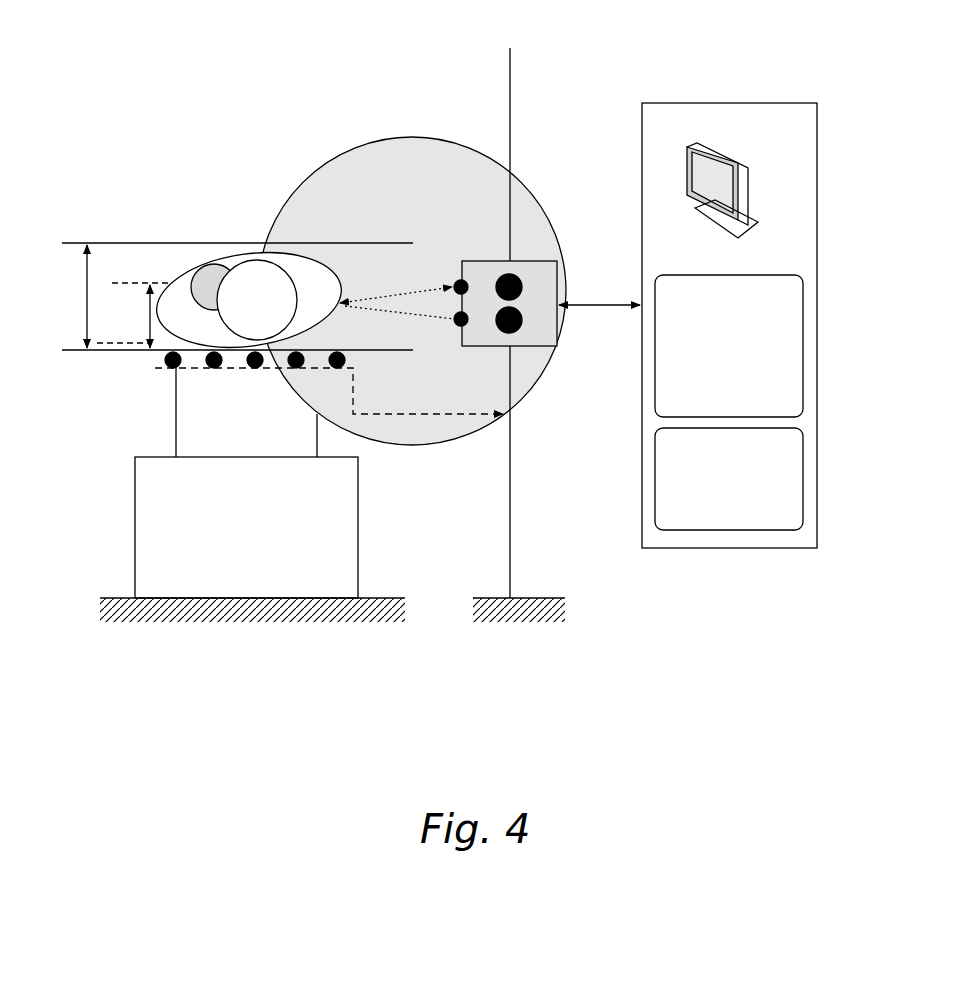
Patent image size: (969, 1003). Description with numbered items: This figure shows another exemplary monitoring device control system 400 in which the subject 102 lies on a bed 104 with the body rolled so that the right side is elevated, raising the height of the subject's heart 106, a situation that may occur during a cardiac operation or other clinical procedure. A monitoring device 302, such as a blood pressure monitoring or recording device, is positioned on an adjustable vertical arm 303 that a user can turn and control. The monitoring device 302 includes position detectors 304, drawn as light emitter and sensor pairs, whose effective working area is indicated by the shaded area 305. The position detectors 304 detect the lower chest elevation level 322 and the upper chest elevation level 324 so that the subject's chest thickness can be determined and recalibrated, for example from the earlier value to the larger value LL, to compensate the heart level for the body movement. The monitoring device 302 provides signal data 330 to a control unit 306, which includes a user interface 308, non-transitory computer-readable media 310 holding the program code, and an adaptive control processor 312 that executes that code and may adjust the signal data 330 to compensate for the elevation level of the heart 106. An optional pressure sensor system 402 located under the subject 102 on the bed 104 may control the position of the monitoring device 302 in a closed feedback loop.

The subject 102 is at (238, 263).
The bed 104 is at (176, 403).
The subject's heart 106 is at (212, 266).
The monitoring device 302 is at (524, 225).
The adjustable vertical arm 303 is at (511, 102).
The position detectors 304 is at (468, 282).
The shaded area 305 is at (405, 148).
The control unit 306 is at (707, 289).
The user interface 308 is at (750, 182).
The non-transitory computer-readable media 310 is at (657, 355).
The adaptive control processor 312 is at (657, 448).
The lower chest elevation level 322 is at (118, 350).
The upper chest elevation level 324 is at (120, 243).
The signal data 330 is at (578, 298).
The monitoring device control system 400 is at (433, 372).
The pressure sensor system 402 is at (248, 366).